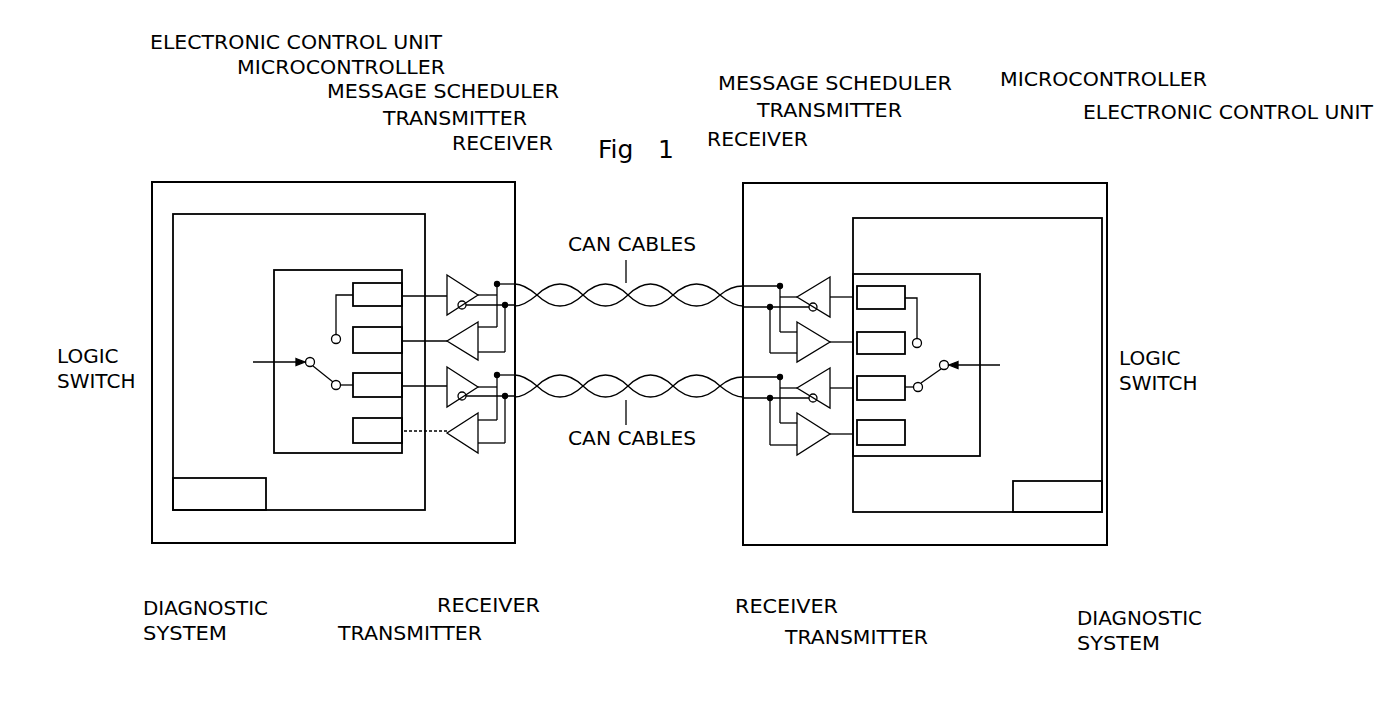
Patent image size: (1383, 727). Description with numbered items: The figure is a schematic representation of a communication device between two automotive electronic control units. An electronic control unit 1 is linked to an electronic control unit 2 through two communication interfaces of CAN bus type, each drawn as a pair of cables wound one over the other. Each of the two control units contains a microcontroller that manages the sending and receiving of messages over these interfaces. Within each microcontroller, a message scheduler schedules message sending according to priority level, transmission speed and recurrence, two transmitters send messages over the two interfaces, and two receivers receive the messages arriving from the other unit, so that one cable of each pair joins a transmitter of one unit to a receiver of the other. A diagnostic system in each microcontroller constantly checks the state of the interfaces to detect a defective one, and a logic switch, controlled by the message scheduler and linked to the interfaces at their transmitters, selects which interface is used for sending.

The electronic control unit 1 is at (157, 62).
The electronic control unit 2 is at (1075, 203).